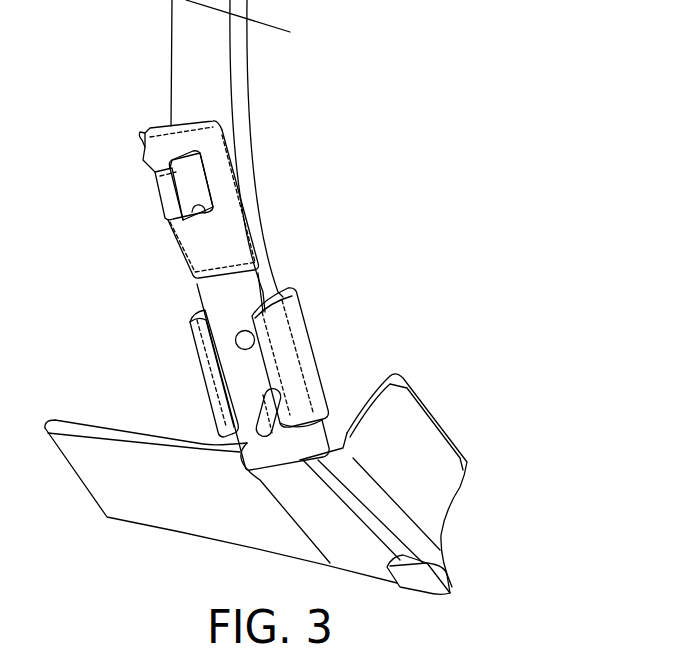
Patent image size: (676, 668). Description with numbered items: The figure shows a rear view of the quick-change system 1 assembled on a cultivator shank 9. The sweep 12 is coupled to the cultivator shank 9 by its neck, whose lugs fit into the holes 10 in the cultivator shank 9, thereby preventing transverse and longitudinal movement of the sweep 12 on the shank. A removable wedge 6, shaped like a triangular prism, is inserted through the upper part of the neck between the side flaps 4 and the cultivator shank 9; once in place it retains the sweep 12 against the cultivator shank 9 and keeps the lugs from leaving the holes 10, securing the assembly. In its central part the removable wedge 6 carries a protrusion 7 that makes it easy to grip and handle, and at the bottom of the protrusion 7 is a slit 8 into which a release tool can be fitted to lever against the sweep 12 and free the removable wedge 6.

The quick-change system 1 is at (414, 244).
The side flaps 4 is at (285, 375).
The removable wedge 6 is at (188, 246).
The protrusion 7 is at (150, 152).
The slit 8 is at (197, 213).
The cultivator shank 9 is at (183, 55).
The holes 10 is at (265, 417).
The sweep 12 is at (413, 423).